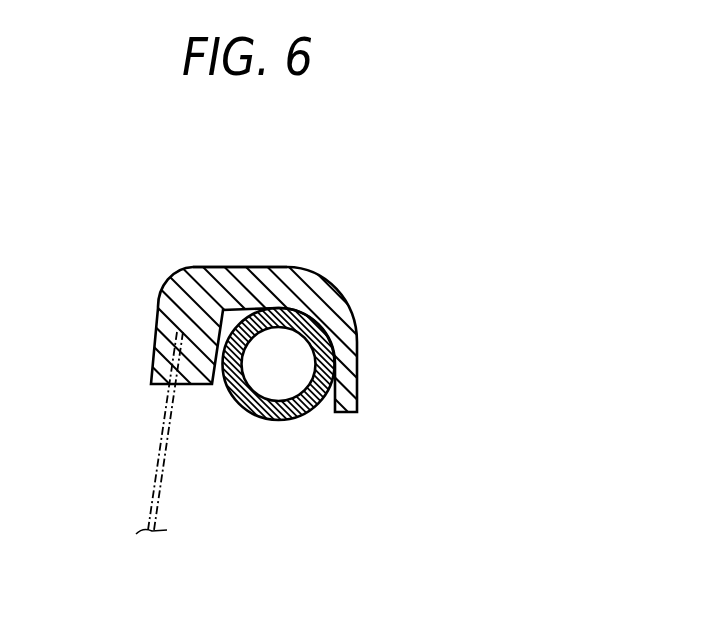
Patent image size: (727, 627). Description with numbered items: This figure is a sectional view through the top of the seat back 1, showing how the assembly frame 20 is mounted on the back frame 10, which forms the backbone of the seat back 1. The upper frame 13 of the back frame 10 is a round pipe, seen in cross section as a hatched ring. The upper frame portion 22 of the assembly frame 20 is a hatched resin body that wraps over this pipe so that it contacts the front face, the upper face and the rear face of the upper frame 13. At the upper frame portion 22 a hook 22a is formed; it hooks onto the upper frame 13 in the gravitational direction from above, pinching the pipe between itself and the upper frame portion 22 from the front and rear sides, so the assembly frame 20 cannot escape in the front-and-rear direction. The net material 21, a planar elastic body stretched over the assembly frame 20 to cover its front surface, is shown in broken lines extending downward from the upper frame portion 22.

The seat back 1 is at (380, 228).
The upper frame portion 22 is at (173, 287).
The assembly frame 20 is at (240, 341).
The hook 22a is at (257, 287).
The upper frame 13 is at (295, 412).
The back frame 10 is at (293, 367).
The net material 21 is at (162, 424).